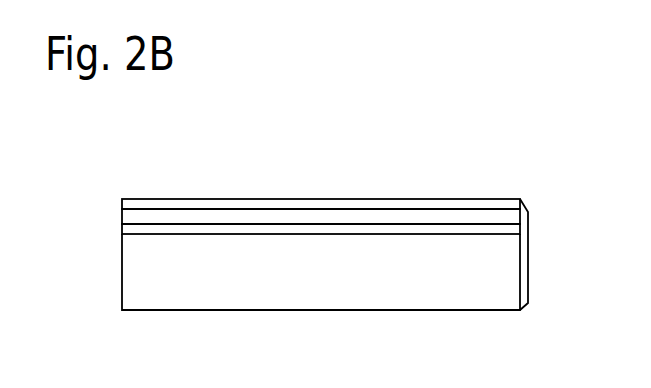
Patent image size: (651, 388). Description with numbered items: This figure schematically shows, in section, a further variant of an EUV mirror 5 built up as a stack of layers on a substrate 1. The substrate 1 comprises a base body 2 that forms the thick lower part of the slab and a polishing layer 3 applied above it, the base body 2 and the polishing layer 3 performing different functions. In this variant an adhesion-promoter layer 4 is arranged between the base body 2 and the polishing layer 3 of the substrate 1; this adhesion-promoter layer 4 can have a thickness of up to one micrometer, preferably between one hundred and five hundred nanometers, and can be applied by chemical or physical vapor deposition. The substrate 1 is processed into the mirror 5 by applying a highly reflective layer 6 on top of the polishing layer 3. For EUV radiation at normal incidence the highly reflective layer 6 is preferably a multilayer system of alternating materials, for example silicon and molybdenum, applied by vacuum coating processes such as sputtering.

The substrate 1 is at (313, 197).
The base body 2 is at (121, 263).
The polishing layer 3 is at (121, 216).
The adhesion-promoter layer 4 is at (121, 229).
The EUV mirror 5 is at (313, 169).
The highly reflective layer 6 is at (522, 204).